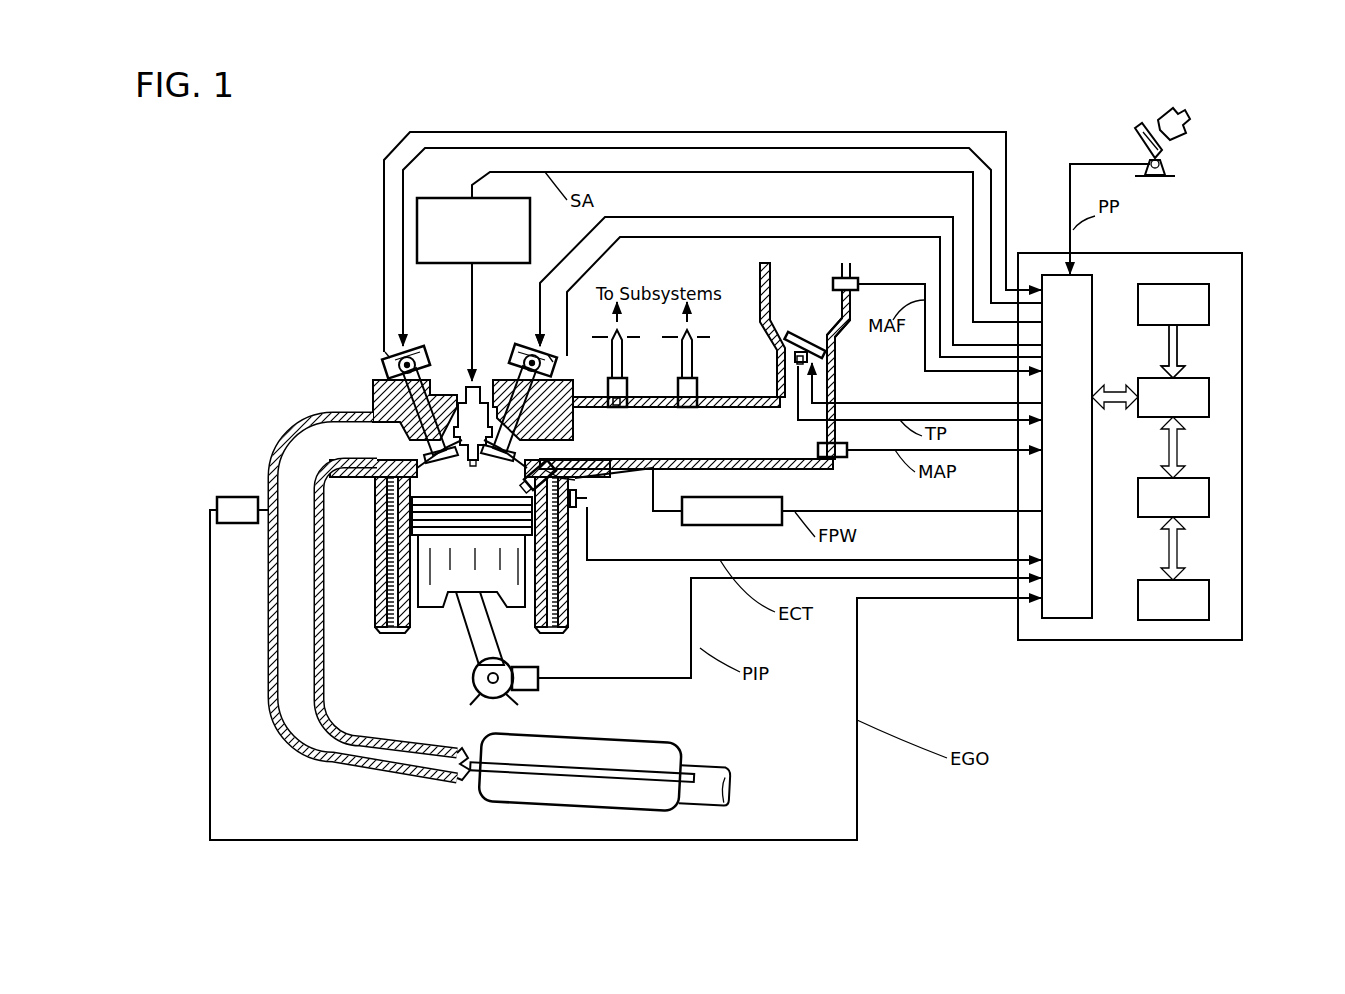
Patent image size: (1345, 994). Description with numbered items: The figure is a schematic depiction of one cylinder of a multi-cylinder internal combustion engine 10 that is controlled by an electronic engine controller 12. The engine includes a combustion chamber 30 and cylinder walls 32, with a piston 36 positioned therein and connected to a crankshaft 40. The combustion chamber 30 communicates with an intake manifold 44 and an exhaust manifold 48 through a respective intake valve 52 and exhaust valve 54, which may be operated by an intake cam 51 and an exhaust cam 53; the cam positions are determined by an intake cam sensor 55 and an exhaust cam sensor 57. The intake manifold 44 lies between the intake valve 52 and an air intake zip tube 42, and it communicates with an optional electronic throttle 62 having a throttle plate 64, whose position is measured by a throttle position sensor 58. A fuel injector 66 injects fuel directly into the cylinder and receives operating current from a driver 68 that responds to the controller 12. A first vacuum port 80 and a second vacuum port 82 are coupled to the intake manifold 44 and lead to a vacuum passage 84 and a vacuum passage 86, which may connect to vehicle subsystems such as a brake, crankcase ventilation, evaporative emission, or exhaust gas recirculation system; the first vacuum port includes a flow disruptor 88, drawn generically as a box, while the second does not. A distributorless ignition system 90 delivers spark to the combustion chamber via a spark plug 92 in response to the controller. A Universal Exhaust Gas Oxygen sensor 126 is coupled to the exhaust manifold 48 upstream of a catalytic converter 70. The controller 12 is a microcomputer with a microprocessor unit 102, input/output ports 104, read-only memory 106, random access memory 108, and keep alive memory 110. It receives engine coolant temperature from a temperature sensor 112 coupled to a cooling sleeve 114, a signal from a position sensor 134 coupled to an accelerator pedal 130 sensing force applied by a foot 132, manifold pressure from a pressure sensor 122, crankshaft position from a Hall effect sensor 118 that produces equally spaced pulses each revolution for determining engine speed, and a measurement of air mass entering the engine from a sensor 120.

The internal combustion engine 10 is at (312, 330).
The electronic engine controller 12 is at (1242, 255).
The combustion chamber 30 is at (491, 582).
The cylinder walls 32 is at (410, 635).
The piston 36 is at (455, 577).
The crankshaft 40 is at (478, 695).
The air intake zip tube 42 is at (812, 309).
The intake manifold 44 is at (750, 449).
The exhaust manifold 48 is at (350, 451).
The intake cam 51 is at (522, 352).
The intake valve 52 is at (513, 445).
The exhaust cam 53 is at (420, 352).
The exhaust valve 54 is at (400, 420).
The intake cam sensor 55 is at (550, 360).
The exhaust cam sensor 57 is at (395, 358).
The throttle position sensor 58 is at (797, 362).
The electronic throttle 62 is at (820, 348).
The throttle plate 64 is at (795, 343).
The fuel injector 66 is at (560, 475).
The driver 68 is at (708, 525).
The catalytic converter 70 is at (640, 745).
The first vacuum port 80 is at (627, 388).
The second vacuum port 82 is at (697, 388).
The vacuum passage 84 is at (622, 358).
The vacuum passage 86 is at (692, 357).
The flow disruptor 88 is at (617, 405).
The distributorless ignition system 90 is at (428, 198).
The spark plug 92 is at (478, 388).
The microprocessor unit 102 is at (1209, 395).
The input/output ports 104 is at (1098, 283).
The read-only memory 106 is at (1209, 300).
The random access memory 108 is at (1209, 495).
The keep alive memory 110 is at (1209, 598).
The temperature sensor 112 is at (580, 506).
The cooling sleeve 114 is at (553, 580).
The Hall effect sensor 118 is at (528, 690).
The air mass sensor 120 is at (848, 278).
The pressure sensor 122 is at (840, 458).
The Universal Exhaust Gas Oxygen sensor 126 is at (217, 502).
The accelerator pedal 130 is at (1135, 140).
The foot 132 is at (1190, 124).
The position sensor 134 is at (1175, 166).